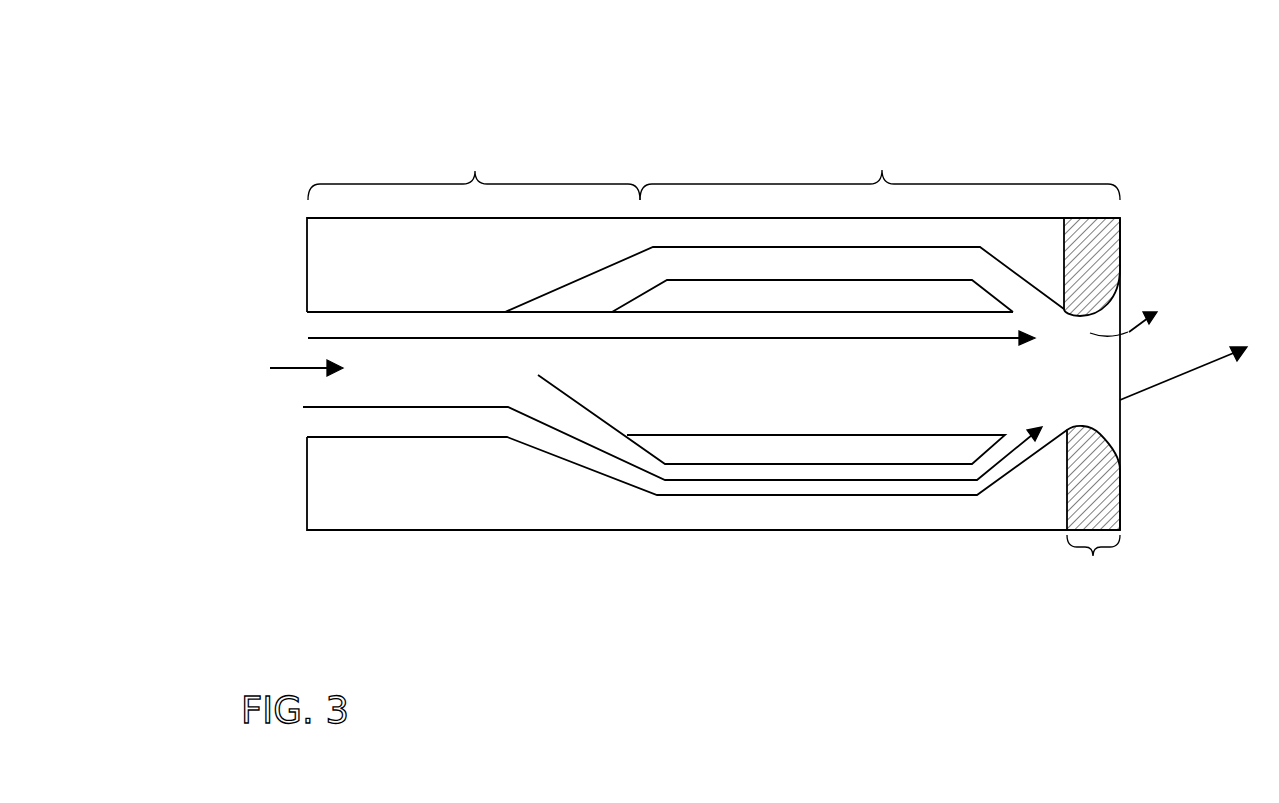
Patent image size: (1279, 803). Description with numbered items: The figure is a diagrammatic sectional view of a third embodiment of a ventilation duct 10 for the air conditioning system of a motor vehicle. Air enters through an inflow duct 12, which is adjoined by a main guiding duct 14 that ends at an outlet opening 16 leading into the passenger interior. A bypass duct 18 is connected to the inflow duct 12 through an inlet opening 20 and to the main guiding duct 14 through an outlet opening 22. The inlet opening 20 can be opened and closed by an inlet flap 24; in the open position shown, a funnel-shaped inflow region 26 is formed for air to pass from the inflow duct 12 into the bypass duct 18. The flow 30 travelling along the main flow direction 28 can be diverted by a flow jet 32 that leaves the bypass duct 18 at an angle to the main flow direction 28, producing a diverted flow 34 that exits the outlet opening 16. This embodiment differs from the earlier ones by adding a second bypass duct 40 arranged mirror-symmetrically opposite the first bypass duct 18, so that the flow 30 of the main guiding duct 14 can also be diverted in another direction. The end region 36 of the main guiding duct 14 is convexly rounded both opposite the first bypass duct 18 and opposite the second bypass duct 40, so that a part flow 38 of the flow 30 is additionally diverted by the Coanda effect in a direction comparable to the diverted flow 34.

The ventilation duct 10 is at (383, 100).
The inflow duct 12 is at (474, 169).
The main guiding duct 14 is at (880, 169).
The outlet opening 16 is at (1120, 438).
The bypass duct 18 is at (739, 260).
The inlet opening 20 is at (522, 433).
The outlet opening 22 is at (1005, 284).
The inlet flap 24 is at (550, 312).
The funnel-shaped inflow region 26 is at (559, 416).
The main flow direction 28 is at (300, 368).
The flow 30 is at (877, 338).
The flow jet 32 is at (995, 463).
The diverted flow 34 is at (1187, 373).
The convexly rounded end region 36 is at (1093, 560).
The part flow 38 is at (1129, 332).
The second bypass duct 40 is at (803, 488).